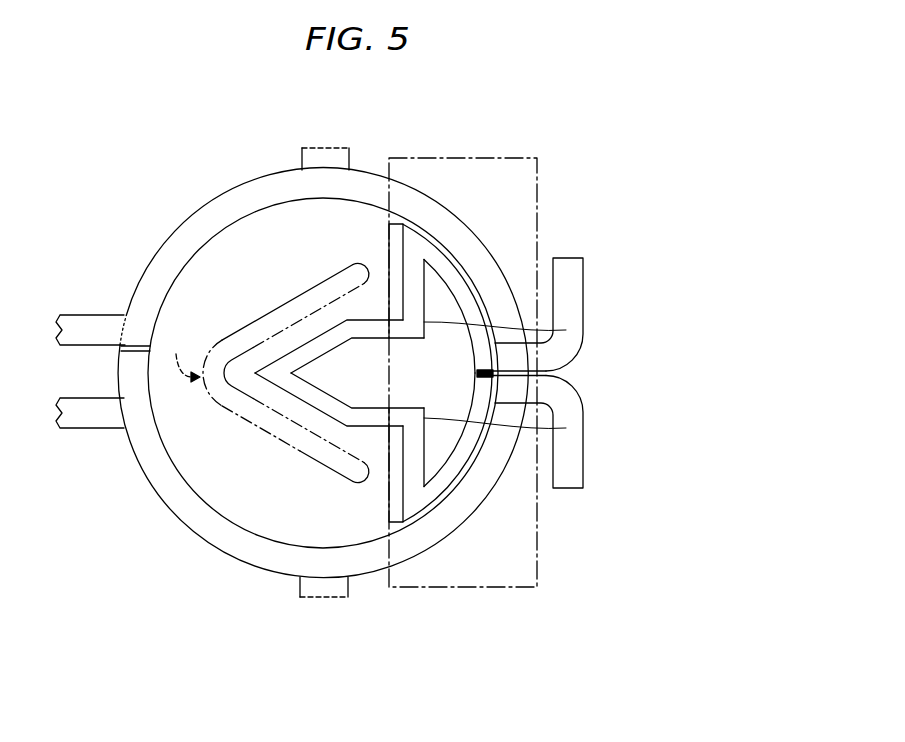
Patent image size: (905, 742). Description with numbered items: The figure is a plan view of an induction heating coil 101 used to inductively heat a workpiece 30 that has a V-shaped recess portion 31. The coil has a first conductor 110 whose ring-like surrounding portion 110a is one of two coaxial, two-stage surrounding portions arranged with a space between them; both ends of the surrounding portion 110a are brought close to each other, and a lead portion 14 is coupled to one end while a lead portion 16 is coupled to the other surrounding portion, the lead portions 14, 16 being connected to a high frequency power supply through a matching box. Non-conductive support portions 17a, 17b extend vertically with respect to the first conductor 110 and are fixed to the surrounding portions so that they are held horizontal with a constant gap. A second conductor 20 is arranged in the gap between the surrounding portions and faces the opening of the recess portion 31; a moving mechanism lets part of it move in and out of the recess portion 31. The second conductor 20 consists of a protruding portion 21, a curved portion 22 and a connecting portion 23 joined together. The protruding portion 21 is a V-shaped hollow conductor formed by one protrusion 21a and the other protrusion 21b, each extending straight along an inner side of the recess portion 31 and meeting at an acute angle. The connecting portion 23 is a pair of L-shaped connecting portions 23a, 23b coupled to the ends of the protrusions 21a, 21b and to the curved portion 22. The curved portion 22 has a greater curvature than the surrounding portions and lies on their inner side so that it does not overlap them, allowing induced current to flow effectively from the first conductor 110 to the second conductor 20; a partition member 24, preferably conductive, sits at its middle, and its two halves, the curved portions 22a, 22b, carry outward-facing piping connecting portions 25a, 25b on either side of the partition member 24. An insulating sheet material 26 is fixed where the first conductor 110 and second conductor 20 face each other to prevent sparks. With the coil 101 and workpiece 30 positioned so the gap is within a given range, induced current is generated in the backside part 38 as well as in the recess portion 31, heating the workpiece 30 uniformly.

The induction heating coil 101 is at (465, 141).
The first conductor 110 is at (197, 214).
The surrounding portion 110a is at (147, 271).
The lead portion 14 is at (78, 314).
The lead portion 16 is at (82, 429).
The non-conductive support portion 17a is at (322, 148).
The non-conductive support portion 17b is at (328, 598).
The second conductor 20 is at (398, 255).
The protruding portion 21 is at (296, 395).
The protrusion 21a is at (307, 340).
The protrusion 21b is at (322, 383).
The curved portion 22 is at (458, 470).
The curved portion 22a is at (457, 276).
The curved portion 22b is at (450, 480).
The connecting portion 23 is at (402, 339).
The connecting portion 23a is at (566, 330).
The connecting portion 23b is at (566, 428).
The partition member 24 is at (487, 376).
The piping connecting portion 25a is at (585, 270).
The piping connecting portion 25b is at (585, 470).
The insulating sheet material 26 is at (438, 158).
The workpiece 30 is at (301, 293).
The recess portion 31 is at (230, 379).
The backside part 38 is at (181, 354).